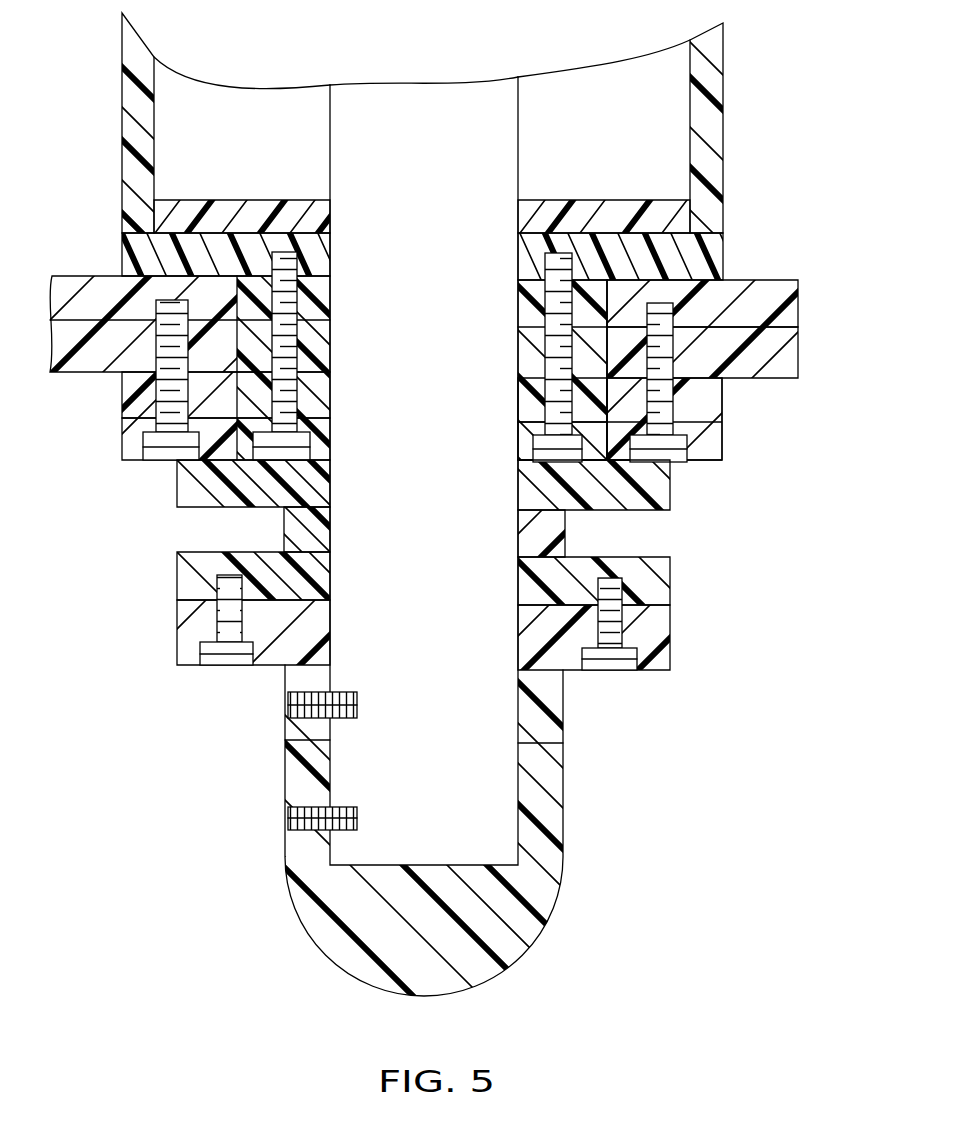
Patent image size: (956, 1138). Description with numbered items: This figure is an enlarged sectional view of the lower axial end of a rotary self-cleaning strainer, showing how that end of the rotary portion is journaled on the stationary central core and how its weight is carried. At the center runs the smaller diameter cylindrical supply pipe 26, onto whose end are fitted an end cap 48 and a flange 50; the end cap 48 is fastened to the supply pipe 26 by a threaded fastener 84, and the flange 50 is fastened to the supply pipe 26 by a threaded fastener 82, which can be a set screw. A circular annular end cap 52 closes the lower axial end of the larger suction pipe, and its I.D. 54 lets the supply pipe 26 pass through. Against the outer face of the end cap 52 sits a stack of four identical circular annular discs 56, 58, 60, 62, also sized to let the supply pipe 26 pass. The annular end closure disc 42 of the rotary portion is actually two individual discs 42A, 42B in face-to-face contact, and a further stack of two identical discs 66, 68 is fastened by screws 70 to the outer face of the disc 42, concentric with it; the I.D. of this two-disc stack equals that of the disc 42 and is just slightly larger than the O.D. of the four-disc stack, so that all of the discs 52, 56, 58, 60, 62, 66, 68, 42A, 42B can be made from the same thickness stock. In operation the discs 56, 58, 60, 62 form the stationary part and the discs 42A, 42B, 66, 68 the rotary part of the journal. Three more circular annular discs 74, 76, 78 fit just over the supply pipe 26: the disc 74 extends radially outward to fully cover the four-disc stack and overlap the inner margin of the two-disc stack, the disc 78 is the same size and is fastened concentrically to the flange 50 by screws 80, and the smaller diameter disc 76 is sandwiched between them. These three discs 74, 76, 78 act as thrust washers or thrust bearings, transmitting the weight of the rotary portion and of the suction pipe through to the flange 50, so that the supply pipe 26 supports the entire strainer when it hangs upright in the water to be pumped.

The supply pipe 26 is at (480, 150).
The end closure disc 42 is at (468, 318).
The disc 42A is at (767, 297).
The disc 42B is at (760, 363).
The end cap 48 is at (548, 820).
The flange 50 is at (460, 611).
The end cap 52 is at (640, 205).
The I.D. 54 is at (520, 237).
The circular annular disc 56 is at (600, 277).
The circular annular disc 58 is at (600, 360).
The circular annular disc 60 is at (590, 405).
The circular annular disc 62 is at (607, 440).
The circular annular disc 66 is at (128, 392).
The circular annular disc 68 is at (130, 440).
The screws 70 is at (170, 437).
The circular annular disc 74 is at (660, 500).
The circular annular disc 76 is at (540, 535).
The circular annular disc 78 is at (645, 590).
The screws 80 is at (228, 650).
The threaded fastener 82 is at (287, 707).
The threaded fastener 84 is at (290, 822).